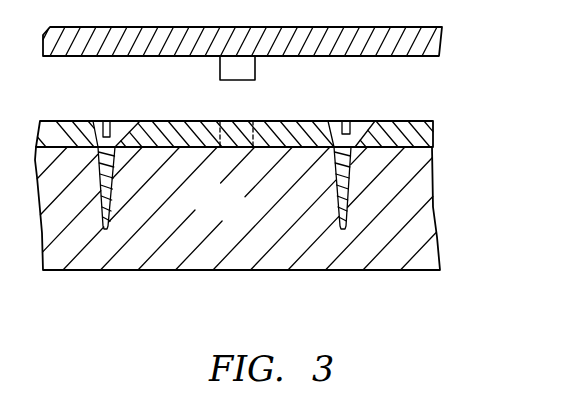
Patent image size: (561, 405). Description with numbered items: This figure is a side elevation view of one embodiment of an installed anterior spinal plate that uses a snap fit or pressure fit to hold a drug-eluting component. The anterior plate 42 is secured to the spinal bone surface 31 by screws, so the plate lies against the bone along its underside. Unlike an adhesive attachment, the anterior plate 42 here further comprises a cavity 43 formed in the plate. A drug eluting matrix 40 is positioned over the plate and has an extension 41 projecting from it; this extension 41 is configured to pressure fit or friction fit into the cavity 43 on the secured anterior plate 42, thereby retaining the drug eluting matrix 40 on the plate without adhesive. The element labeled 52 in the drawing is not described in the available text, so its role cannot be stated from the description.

The spinal bone surface 31 is at (240, 216).
The drug eluting matrix 40 is at (440, 27).
The extension 41 is at (255, 80).
The anterior plate 42 is at (413, 120).
The cavity 43 is at (230, 120).
The tapered pit 52 is at (347, 208).